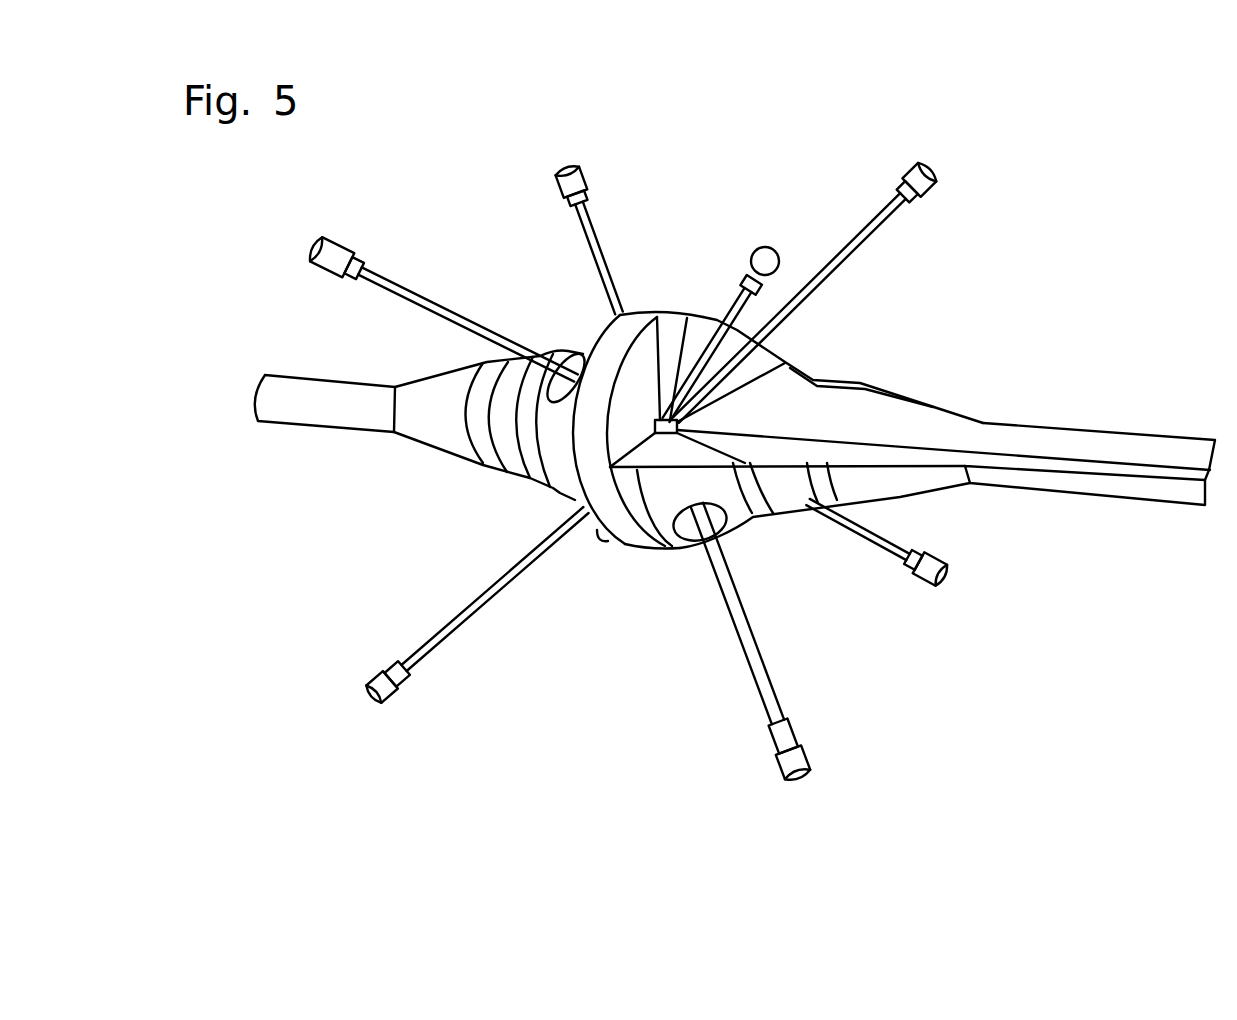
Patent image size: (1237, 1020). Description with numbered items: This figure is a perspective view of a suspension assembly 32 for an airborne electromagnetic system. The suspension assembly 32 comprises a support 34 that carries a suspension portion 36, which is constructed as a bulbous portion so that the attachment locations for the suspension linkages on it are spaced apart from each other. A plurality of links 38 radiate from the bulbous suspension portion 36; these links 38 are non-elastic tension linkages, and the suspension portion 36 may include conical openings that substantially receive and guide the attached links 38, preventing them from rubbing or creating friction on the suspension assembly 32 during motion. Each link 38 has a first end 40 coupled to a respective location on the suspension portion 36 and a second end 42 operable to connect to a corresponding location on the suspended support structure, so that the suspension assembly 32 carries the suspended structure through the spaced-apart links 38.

The suspension assembly 32 is at (735, 452).
The support 34 is at (942, 405).
The suspension portion 36 is at (627, 548).
The links 38 is at (628, 452).
The first end 40 is at (668, 392).
The second end 42 is at (806, 740).